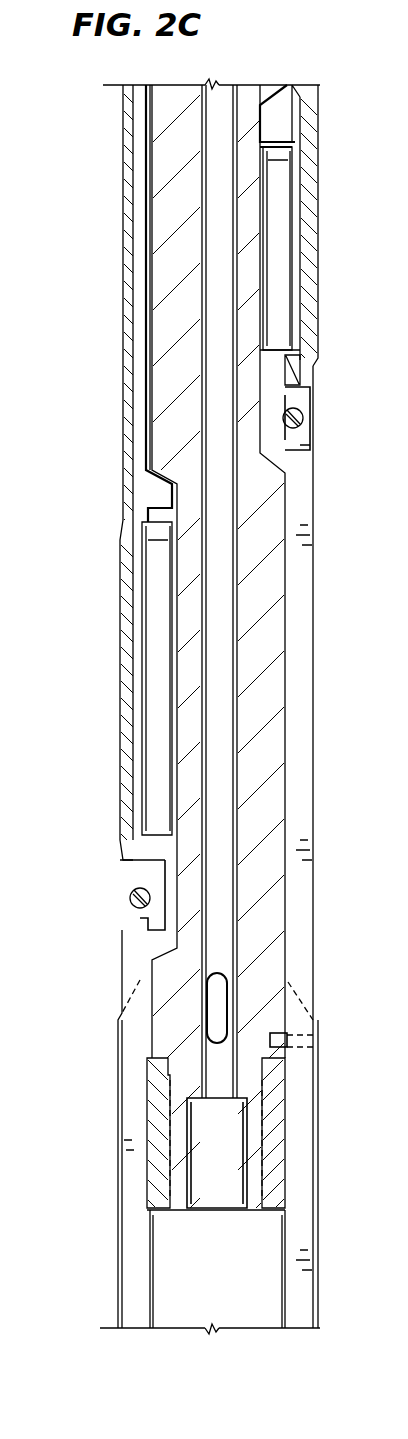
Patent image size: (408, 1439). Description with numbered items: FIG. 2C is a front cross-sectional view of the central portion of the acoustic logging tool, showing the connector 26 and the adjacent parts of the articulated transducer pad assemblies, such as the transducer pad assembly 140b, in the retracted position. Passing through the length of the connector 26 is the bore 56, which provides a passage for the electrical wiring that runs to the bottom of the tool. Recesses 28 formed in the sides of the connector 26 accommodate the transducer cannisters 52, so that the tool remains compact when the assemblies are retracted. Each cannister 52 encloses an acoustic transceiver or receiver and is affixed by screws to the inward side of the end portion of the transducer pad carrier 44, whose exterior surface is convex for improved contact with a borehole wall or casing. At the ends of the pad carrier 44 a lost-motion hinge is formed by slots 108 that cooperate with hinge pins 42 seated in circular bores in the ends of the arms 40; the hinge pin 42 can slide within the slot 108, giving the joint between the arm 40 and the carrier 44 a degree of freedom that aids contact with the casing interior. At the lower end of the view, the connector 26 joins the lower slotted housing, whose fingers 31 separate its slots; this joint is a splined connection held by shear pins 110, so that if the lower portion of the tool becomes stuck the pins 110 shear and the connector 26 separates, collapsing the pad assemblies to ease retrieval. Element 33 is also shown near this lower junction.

The transducer pad assembly 140b is at (137, 237).
The transducer pad carrier 44 is at (130, 337).
The protective cannister 52 is at (152, 685).
The recess 28 is at (282, 363).
The slot 108 is at (296, 393).
The hinge pin 42 is at (296, 430).
The bore 56 is at (238, 622).
The connector 26 is at (262, 697).
The arm 40 is at (300, 767).
The shear pin 110 is at (290, 1052).
The finger 31 is at (318, 1133).
The plug 33 is at (267, 1183).